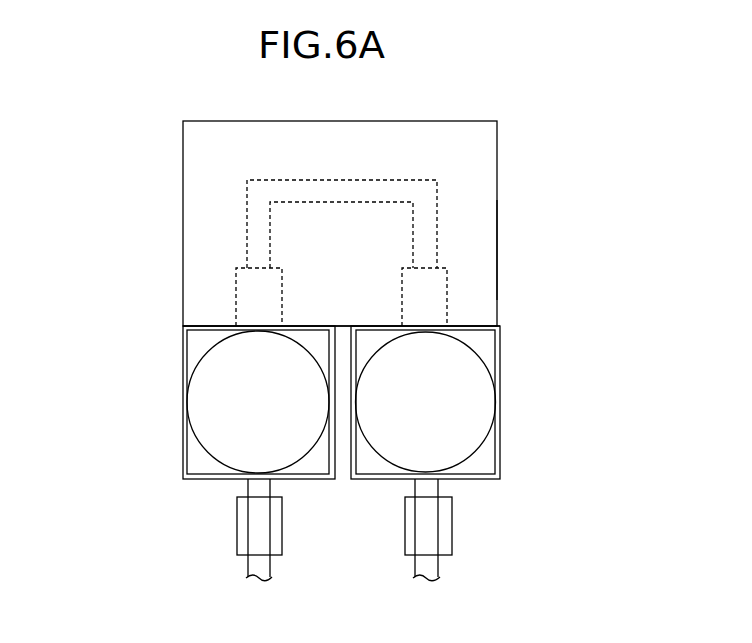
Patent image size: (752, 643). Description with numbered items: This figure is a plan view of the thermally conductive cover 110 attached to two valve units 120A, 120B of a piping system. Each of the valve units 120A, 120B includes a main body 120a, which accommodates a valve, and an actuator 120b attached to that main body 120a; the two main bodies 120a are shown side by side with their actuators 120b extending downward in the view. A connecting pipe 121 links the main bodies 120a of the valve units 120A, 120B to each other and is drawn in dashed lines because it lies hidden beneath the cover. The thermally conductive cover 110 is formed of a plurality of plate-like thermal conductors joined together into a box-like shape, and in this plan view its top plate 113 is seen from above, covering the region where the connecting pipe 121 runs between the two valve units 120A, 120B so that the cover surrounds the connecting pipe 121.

The thermally conductive cover 110 is at (499, 169).
The top plate 113 is at (491, 243).
The connecting pipe 121 is at (313, 180).
The valve unit 120A is at (194, 458).
The valve unit 120B is at (488, 363).
The main body 120a is at (195, 353).
The actuator 120b is at (229, 458).